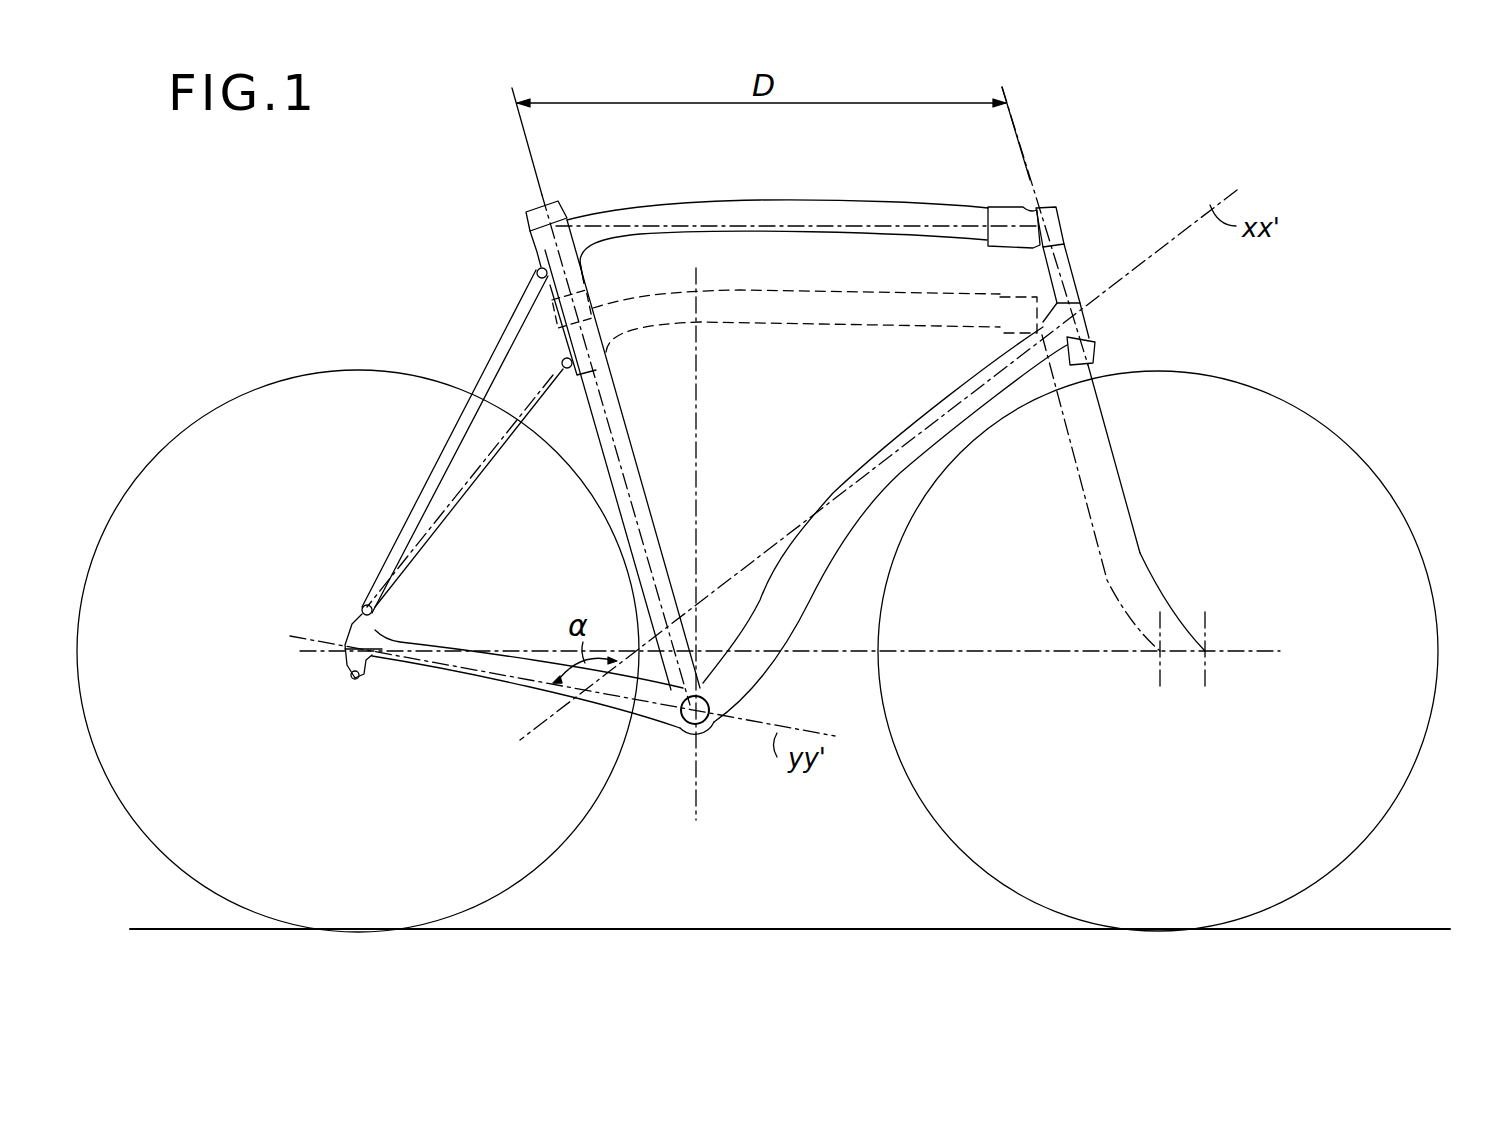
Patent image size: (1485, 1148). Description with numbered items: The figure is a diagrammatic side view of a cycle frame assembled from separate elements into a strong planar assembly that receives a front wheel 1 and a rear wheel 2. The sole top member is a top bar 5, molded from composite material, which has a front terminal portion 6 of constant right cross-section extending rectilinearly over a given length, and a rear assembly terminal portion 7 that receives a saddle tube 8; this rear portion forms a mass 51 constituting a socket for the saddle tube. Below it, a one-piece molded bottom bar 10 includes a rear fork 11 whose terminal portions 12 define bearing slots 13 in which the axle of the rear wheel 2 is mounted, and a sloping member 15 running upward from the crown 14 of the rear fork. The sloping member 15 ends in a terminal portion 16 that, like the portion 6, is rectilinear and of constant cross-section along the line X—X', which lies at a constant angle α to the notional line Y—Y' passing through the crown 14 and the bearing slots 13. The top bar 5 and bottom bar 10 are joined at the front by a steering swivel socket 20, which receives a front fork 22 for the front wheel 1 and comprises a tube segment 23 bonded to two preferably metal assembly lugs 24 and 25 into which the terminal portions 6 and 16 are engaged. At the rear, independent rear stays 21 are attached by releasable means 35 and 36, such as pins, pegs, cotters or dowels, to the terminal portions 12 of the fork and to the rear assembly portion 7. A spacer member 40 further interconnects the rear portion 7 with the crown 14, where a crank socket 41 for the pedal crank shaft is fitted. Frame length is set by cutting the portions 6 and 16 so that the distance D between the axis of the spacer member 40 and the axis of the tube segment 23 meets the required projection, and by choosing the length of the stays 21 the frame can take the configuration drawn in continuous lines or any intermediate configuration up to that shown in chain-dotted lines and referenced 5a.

The front wheel 1 is at (1358, 447).
The rear wheel 2 is at (206, 422).
The top bar 5 is at (820, 195).
The top bar in alternative position 5a is at (790, 320).
The front terminal portion 6 is at (974, 206).
The rear assembly terminal portion 7 is at (574, 212).
The saddle tube 8 is at (538, 181).
The bottom bar 10 is at (803, 605).
The rear fork 11 is at (430, 634).
The terminal portions 12 is at (373, 633).
The bearing slots 13 is at (362, 655).
The crown 14 is at (673, 718).
The sloping member 15 is at (825, 510).
The terminal portion 16 is at (945, 400).
The steering swivel socket 20 is at (1086, 282).
The rear stays 21 is at (433, 472).
The front fork 22 is at (1130, 555).
The tube segment 23 is at (1070, 252).
The assembly lug 24 is at (1040, 207).
The assembly lug 25 is at (1096, 328).
The releasable assembly means 35 is at (362, 607).
The releasable assembly means 36 is at (536, 272).
The spacer member 40 is at (643, 484).
The crank socket 41 is at (702, 730).
The mass forming saddle tube socket 51 is at (590, 244).